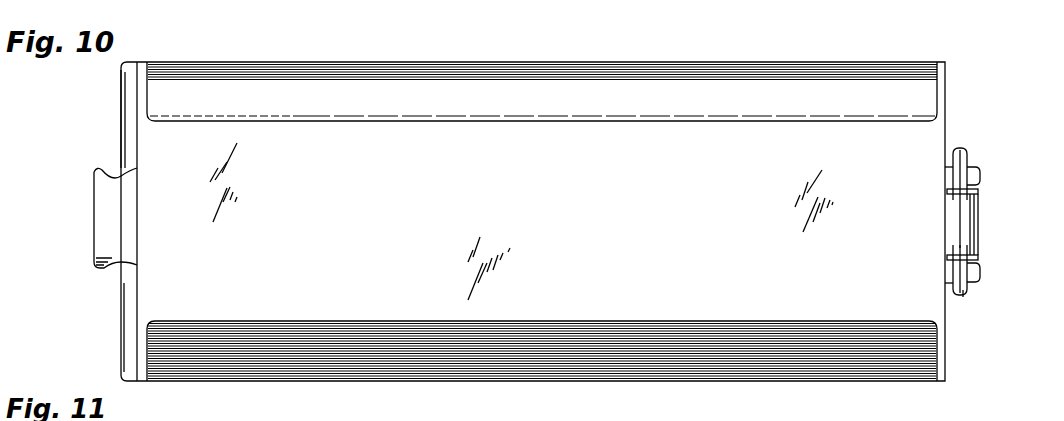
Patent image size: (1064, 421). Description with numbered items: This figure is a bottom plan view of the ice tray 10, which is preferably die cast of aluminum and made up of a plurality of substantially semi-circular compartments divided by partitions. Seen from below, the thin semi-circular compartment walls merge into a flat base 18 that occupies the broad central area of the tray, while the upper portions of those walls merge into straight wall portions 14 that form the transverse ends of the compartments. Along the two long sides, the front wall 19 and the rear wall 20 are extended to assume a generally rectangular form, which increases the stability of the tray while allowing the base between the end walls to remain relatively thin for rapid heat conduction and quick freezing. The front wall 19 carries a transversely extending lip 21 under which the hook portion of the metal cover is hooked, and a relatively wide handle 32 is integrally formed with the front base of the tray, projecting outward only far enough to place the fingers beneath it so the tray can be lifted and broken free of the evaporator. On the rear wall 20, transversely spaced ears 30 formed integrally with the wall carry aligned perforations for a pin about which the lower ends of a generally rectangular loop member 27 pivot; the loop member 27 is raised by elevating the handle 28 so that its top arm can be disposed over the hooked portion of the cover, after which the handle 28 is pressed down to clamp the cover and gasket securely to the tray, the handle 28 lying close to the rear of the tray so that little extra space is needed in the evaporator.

The ice tray 10 is at (556, 381).
The straight wall portions 14 is at (542, 271).
The flat base 18 is at (604, 181).
The front wall 19 is at (143, 343).
The rear wall 20 is at (940, 86).
The lip 21 is at (128, 123).
The loop member 27 is at (963, 296).
The handle 28 is at (978, 222).
The ears 30 is at (979, 180).
The handle 32 is at (98, 236).